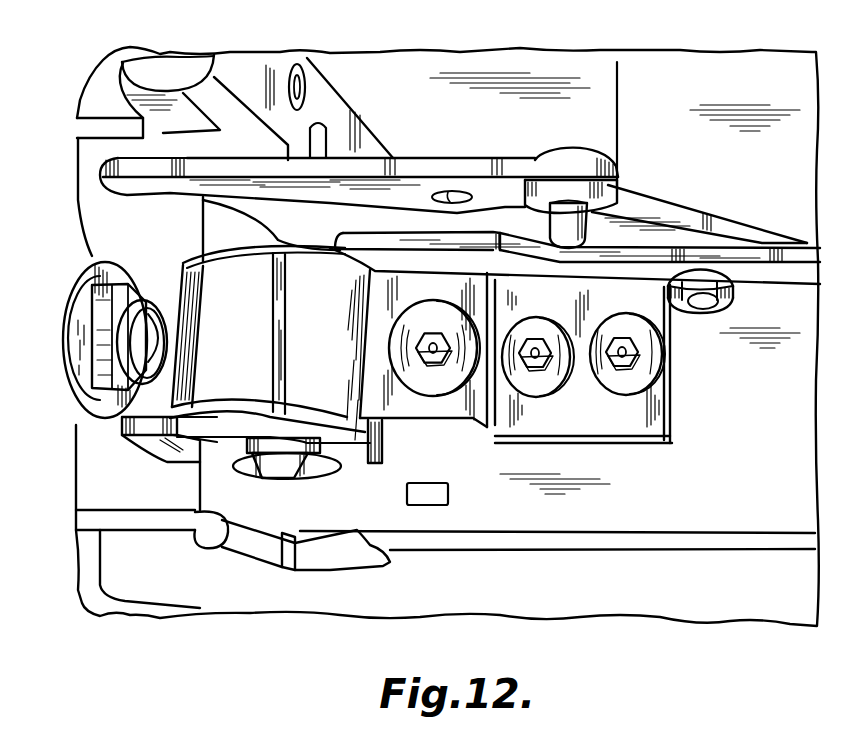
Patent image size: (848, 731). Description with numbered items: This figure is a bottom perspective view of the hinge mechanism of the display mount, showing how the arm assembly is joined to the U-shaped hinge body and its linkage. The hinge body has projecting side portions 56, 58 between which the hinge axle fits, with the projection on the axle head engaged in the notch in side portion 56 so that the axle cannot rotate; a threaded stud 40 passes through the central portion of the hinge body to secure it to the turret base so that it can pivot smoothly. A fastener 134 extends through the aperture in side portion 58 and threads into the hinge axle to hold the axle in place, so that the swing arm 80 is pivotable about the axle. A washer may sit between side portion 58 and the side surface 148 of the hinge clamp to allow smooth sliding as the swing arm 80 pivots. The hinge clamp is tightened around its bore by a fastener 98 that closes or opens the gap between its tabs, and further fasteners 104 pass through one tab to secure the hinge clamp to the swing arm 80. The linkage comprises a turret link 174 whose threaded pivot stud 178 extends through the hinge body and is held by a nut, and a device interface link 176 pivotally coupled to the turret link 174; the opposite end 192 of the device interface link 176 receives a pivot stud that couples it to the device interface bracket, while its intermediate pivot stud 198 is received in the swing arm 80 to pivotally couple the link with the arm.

The side portion 56 is at (330, 104).
The turret link 174 is at (475, 167).
The threaded pivot stud 178 is at (618, 190).
The device interface link 176 is at (680, 213).
The side surface 148 is at (265, 248).
The threaded stud 40 is at (107, 257).
The side portion 58 is at (155, 450).
The fastener 134 is at (290, 482).
The opposite end 192 is at (370, 440).
The fastener 98 is at (457, 393).
The fasteners 104 is at (625, 395).
The intermediate pivot stud 198 is at (713, 315).
The swing arm 80 is at (686, 485).